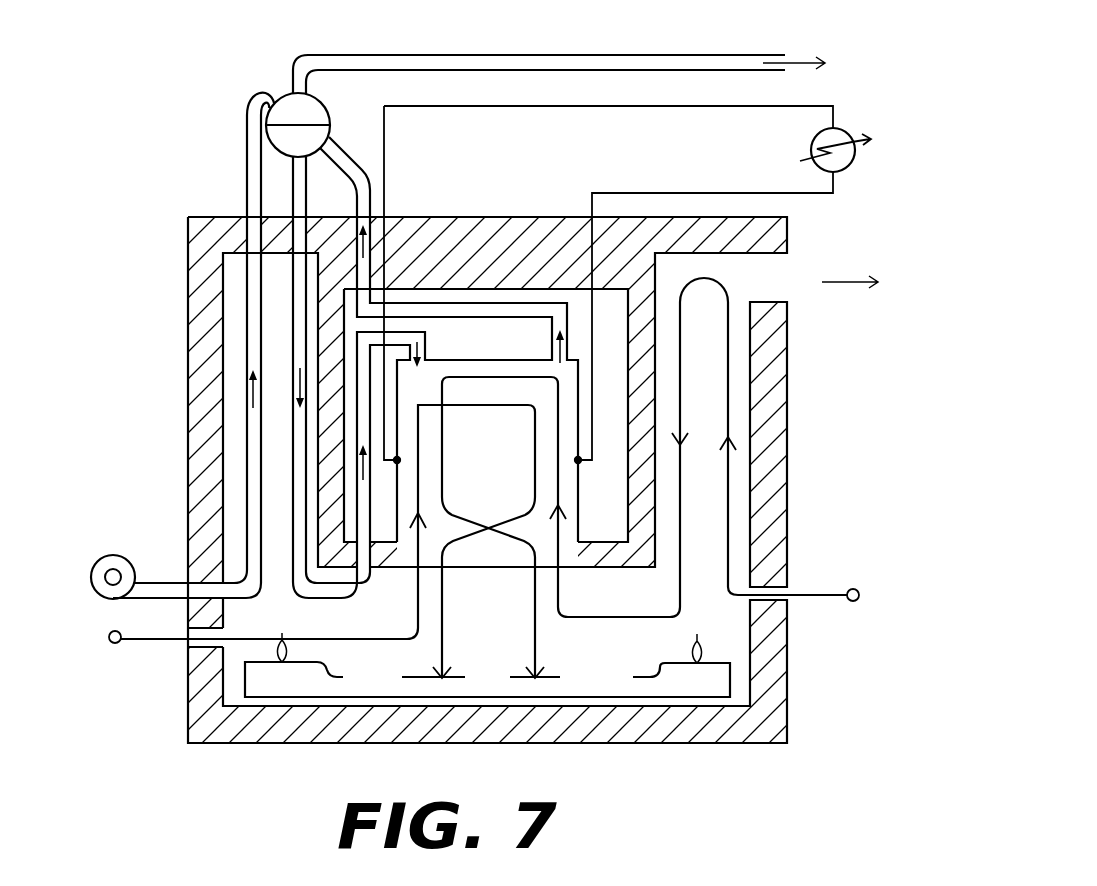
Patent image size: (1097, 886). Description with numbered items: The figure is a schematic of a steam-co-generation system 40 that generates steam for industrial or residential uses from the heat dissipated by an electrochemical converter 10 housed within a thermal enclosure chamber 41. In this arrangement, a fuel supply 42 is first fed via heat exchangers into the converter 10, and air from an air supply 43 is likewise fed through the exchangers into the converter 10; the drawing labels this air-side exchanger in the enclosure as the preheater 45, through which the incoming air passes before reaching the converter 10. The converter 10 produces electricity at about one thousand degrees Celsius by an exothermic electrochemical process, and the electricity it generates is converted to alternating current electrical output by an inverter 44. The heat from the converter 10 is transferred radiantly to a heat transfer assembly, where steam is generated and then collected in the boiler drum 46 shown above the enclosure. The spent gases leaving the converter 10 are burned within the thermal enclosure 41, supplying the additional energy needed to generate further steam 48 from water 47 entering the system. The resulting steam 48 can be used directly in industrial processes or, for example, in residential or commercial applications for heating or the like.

The steam-co-generation system 40 is at (546, 44).
The steam 48 is at (571, 61).
The inverter 44 is at (842, 128).
The boiler drum 46 is at (277, 117).
The electrochemical converter 10 is at (422, 403).
The preheater 45 is at (710, 353).
The thermal enclosure chamber 41 is at (788, 474).
The water 47 is at (178, 346).
The air supply 43 is at (837, 581).
The fuel supply 42 is at (247, 643).